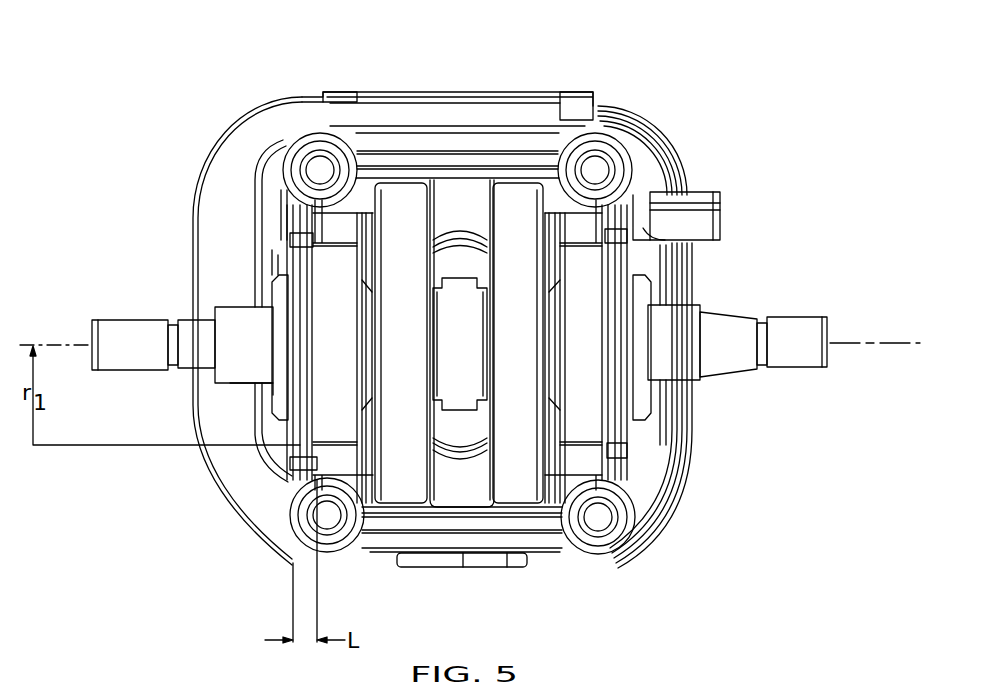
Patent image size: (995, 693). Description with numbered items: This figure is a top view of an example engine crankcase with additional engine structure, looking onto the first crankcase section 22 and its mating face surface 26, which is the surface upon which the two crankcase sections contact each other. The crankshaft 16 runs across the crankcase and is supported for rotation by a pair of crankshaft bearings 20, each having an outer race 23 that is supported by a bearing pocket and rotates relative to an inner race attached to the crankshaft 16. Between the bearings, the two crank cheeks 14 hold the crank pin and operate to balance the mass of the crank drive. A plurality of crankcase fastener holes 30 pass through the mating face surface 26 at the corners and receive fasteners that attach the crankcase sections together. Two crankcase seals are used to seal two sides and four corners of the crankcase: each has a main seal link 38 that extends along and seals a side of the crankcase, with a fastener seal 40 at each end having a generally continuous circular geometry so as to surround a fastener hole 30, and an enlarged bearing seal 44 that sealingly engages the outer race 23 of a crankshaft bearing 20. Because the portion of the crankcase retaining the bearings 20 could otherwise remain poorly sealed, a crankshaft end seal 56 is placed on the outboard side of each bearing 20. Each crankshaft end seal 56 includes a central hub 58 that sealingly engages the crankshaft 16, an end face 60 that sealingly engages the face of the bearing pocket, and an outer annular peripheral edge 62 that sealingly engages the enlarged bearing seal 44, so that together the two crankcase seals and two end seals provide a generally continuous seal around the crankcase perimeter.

The crank cheeks 14 is at (397, 222).
The crankshaft 16 is at (232, 316).
The crankshaft bearings 20 is at (300, 428).
The first crankcase section 22 is at (638, 545).
The outer race 23 is at (344, 344).
The mating face surface 26 is at (465, 136).
The crankcase fastener holes 30 is at (318, 160).
The main seal link 38 is at (532, 160).
The fastener seal 40 is at (630, 162).
The enlarged bearing seal 44 is at (300, 238).
The crankshaft end seal 56 is at (278, 370).
The central hub 58 is at (262, 388).
The end face 60 is at (268, 265).
The outer annular peripheral edge 62 is at (280, 246).